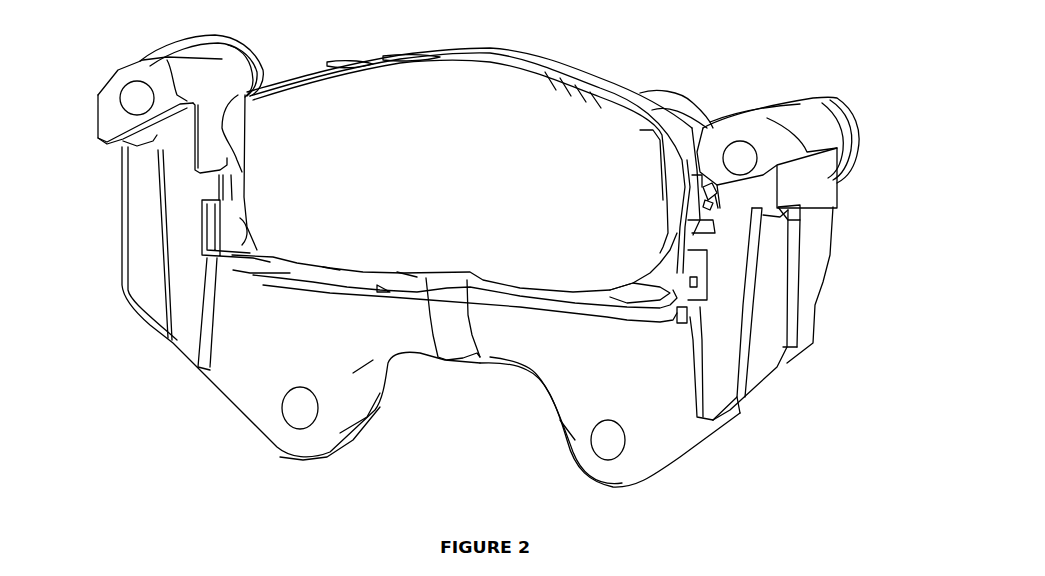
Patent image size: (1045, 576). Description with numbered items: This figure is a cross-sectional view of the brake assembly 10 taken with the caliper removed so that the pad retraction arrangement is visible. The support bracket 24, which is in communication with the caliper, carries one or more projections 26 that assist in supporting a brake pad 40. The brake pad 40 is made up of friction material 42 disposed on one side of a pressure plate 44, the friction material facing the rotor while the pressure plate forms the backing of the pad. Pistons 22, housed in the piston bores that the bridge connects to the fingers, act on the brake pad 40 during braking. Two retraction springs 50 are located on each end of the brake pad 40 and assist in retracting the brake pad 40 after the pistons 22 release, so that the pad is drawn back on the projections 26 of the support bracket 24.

The brake assembly 10 is at (106, 44).
The pistons 22 is at (687, 105).
The support bracket 24 is at (725, 308).
The projections 26 is at (703, 240).
The brake pad 40 is at (437, 68).
The friction material 42 is at (540, 138).
The pressure plate 44 is at (233, 113).
The retraction springs 50 is at (683, 271).